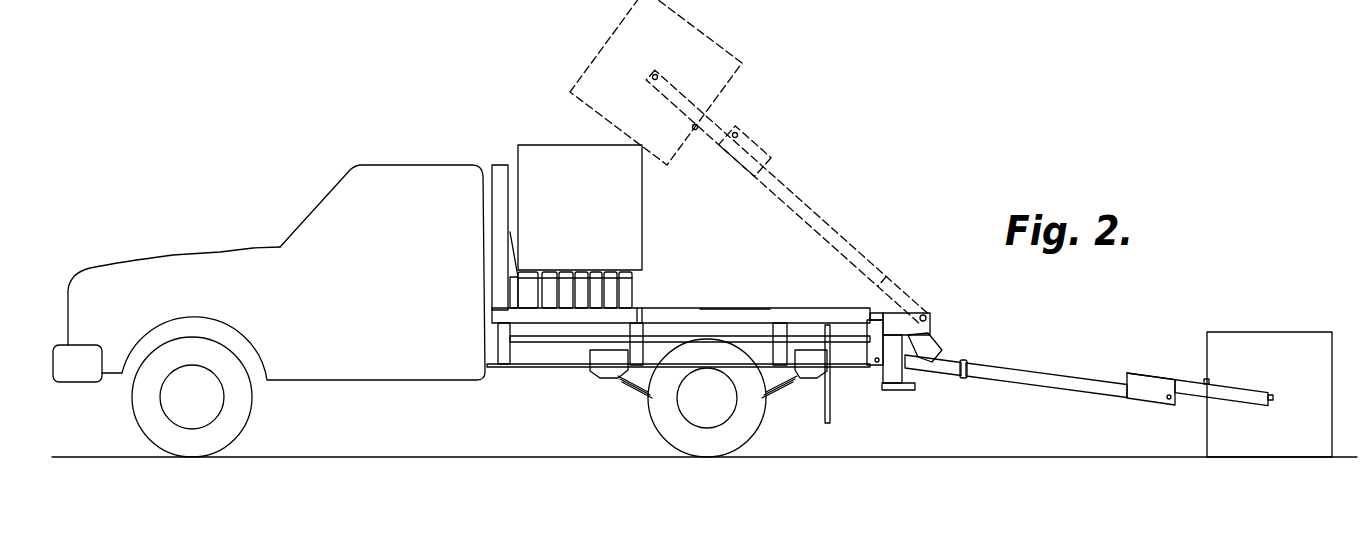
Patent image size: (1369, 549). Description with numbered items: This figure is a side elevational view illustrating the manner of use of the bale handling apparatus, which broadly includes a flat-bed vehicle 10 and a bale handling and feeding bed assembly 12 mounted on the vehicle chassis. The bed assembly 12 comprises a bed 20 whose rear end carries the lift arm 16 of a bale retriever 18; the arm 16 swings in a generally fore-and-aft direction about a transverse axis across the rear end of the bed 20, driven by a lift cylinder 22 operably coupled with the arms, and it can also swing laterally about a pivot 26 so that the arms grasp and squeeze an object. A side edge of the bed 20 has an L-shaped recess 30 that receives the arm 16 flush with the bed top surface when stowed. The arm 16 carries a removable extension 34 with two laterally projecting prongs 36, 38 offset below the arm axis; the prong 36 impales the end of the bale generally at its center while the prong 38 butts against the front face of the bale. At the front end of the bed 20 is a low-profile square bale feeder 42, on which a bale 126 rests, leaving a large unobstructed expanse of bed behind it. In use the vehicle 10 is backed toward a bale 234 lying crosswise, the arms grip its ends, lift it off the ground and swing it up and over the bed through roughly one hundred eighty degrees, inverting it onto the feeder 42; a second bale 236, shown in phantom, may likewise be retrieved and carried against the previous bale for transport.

The flat-bed vehicle 10 is at (268, 226).
The bale handling and feeding bed assembly 12 is at (918, 250).
The lift arm 16 is at (818, 201).
The bale retriever 18 is at (1090, 327).
The bed 20 is at (772, 309).
The lift cylinder 22 is at (882, 312).
The pivot 26 is at (966, 357).
The recess 30 is at (713, 312).
The extension 34 is at (1152, 398).
The prong 36 is at (1274, 396).
The prong 38 is at (1205, 379).
The square bale feeder 42 is at (642, 282).
The bale 126 is at (539, 150).
The bale 234 is at (1272, 340).
The second bale 236 is at (698, 62).